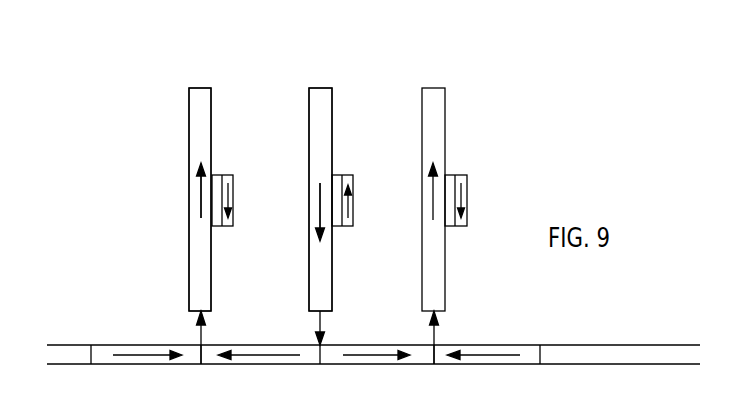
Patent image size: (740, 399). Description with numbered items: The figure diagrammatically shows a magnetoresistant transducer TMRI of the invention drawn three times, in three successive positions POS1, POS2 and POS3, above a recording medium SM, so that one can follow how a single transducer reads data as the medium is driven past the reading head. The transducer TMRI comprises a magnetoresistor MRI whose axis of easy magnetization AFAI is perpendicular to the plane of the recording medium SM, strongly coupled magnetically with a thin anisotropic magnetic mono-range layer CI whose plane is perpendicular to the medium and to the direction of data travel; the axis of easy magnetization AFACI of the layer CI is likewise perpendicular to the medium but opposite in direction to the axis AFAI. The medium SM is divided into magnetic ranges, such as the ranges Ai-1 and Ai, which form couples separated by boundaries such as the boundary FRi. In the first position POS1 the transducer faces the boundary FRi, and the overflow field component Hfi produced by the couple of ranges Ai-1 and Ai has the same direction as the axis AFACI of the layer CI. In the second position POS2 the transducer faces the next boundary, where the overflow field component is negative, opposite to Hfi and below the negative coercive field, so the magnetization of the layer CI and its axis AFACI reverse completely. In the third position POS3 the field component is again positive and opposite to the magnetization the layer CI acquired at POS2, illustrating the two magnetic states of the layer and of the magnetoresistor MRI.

The first position POS1 is at (200, 75).
The second position POS2 is at (322, 75).
The third position POS3 is at (438, 75).
The magnetic mono-range layer CI is at (189, 108).
The transducer TMRI is at (154, 156).
The axis of easy magnetization of the mono-range layer AFACI is at (198, 194).
The axis of easy magnetization of the magnetoresistor AFAI is at (233, 193).
The magnetoresistor MRI is at (233, 224).
The recording medium SM is at (641, 345).
The overflow field component Hfi is at (221, 336).
The boundary FRi is at (201, 365).
The magnetic range Ai-1 is at (98, 366).
The magnetic range Ai is at (268, 366).